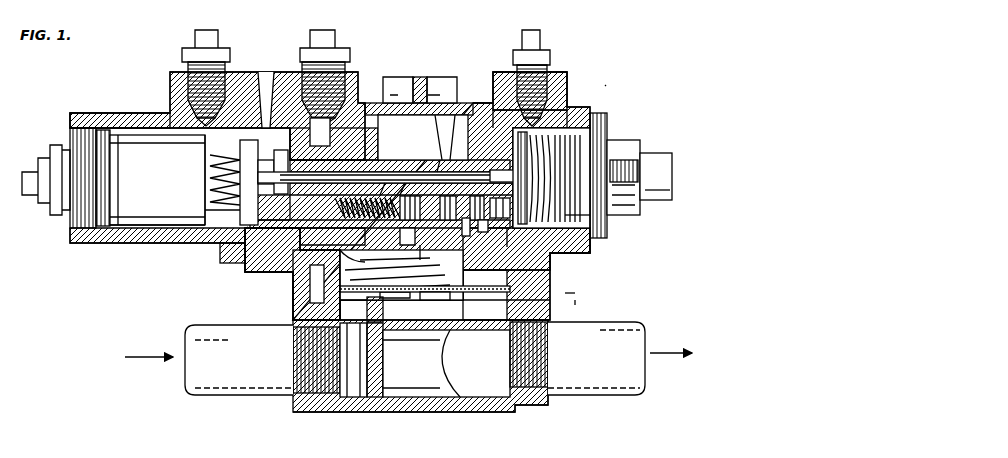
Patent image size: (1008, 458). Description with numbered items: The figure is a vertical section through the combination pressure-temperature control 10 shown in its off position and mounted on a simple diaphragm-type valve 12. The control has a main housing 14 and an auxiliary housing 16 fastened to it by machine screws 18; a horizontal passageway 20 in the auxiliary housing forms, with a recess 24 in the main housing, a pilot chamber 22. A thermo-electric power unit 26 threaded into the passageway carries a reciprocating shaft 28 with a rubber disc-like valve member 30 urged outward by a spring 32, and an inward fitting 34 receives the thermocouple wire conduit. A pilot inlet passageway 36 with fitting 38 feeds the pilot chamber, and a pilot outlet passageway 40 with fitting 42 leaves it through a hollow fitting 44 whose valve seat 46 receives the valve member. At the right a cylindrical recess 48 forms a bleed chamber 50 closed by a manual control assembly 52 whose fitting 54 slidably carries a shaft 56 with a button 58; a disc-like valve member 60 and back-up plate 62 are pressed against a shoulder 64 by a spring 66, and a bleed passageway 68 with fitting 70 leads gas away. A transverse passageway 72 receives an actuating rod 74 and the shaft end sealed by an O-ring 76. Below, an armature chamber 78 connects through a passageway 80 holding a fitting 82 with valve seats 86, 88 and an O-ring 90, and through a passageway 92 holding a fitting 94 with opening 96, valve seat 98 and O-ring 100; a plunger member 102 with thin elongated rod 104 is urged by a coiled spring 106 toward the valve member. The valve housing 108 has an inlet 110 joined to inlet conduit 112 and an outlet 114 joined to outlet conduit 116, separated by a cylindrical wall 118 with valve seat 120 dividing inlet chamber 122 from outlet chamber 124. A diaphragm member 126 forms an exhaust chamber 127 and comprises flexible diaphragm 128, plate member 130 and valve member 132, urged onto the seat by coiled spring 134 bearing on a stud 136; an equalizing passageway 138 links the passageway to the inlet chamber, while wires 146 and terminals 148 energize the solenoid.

The combination pressure-temperature control 10 is at (613, 79).
The diaphragm-type valve 12 is at (583, 298).
The main housing 14 is at (365, 80).
The auxiliary housing 16 is at (133, 113).
The machine screws 18 is at (222, 257).
The passageway 20 is at (148, 232).
The pilot chamber 22 is at (208, 225).
The recess 24 is at (264, 72).
The thermo-electric power unit 26 is at (125, 228).
The reciprocating shaft 28 is at (213, 177).
The disc-like valve member 30 is at (215, 212).
The spring 32 is at (212, 165).
The inward fitting 34 is at (60, 150).
The pilot inlet passageway 36 is at (207, 128).
The fitting 38 is at (225, 48).
The pilot outlet passageway 40 is at (328, 152).
The fitting 42 is at (345, 50).
The hollow fitting 44 is at (284, 137).
The valve seat 46 is at (258, 140).
The cylindrical recess 48 is at (542, 127).
The bleed chamber 50 is at (547, 130).
The manual control assembly 52 is at (645, 140).
The fitting 54 is at (604, 118).
The shaft 56 is at (492, 173).
The button 58 is at (660, 153).
The disc-like valve member 60 is at (550, 257).
The back-up plate 62 is at (590, 248).
The shoulder 64 is at (527, 170).
The spring 66 is at (585, 212).
The bleed passageway 68 is at (497, 118).
The fitting 70 is at (548, 57).
The passageway 72 is at (378, 180).
The actuating rod 74 is at (397, 180).
The O-ring 76 is at (440, 165).
The armature chamber 78 is at (437, 288).
The passageway 80 is at (475, 213).
The fitting 82 is at (557, 230).
The valve seat 86 is at (500, 208).
The valve seat 88 is at (495, 205).
The O-ring 90 is at (512, 235).
The passageway 92 is at (337, 200).
The fitting 94 is at (407, 265).
The opening 96 is at (432, 205).
The valve seat 98 is at (477, 205).
The O-ring 100 is at (390, 205).
The plunger member 102 is at (280, 260).
The thin elongated rod 104 is at (362, 242).
The coiled spring 106 is at (353, 223).
The valve housing 108 is at (442, 417).
The inlet 110 is at (277, 393).
The inlet conduit 112 is at (223, 387).
The outlet 114 is at (550, 373).
The outlet conduit 116 is at (615, 373).
The cylindrical wall 118 is at (385, 347).
The valve seat 120 is at (358, 323).
The inlet chamber 122 is at (360, 397).
The outlet chamber 124 is at (440, 367).
The diaphragm member 126 is at (430, 300).
The exhaust chamber 127 is at (567, 295).
The flexible diaphragm 128 is at (300, 330).
The plate member 130 is at (399, 275).
The valve member 132 is at (545, 313).
The coiled spring 134 is at (512, 282).
The stud 136 is at (396, 275).
The equalizing passageway 138 is at (292, 292).
The wires 146 is at (440, 123).
The terminals 148 is at (453, 100).